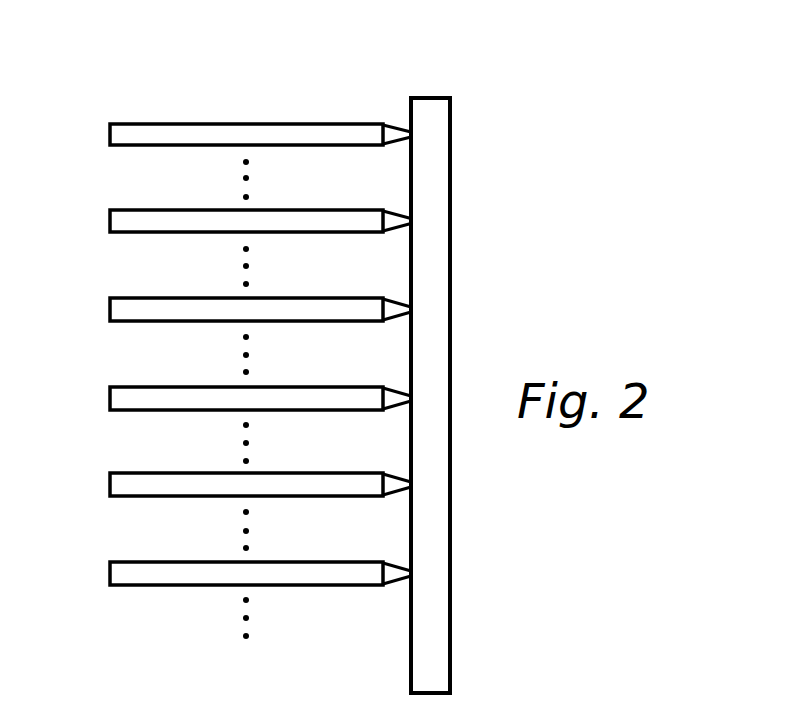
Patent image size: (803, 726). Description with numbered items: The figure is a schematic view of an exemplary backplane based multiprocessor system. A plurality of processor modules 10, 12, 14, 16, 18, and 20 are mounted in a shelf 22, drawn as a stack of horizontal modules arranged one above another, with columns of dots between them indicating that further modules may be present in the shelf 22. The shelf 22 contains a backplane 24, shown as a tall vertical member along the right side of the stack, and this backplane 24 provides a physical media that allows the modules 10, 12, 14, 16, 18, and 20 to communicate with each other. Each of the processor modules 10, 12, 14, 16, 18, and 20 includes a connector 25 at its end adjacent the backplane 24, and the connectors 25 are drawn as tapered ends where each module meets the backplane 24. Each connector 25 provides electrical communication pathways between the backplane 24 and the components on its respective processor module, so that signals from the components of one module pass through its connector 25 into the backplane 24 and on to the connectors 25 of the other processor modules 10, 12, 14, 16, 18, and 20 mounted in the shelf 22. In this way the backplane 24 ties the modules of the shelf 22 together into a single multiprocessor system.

The processor module 10 is at (158, 124).
The processor module 12 is at (158, 210).
The processor module 14 is at (158, 298).
The processor module 16 is at (158, 387).
The processor module 18 is at (158, 473).
The processor module 20 is at (158, 562).
The shelf 22 is at (293, 90).
The backplane 24 is at (452, 197).
The connector 25 is at (398, 141).